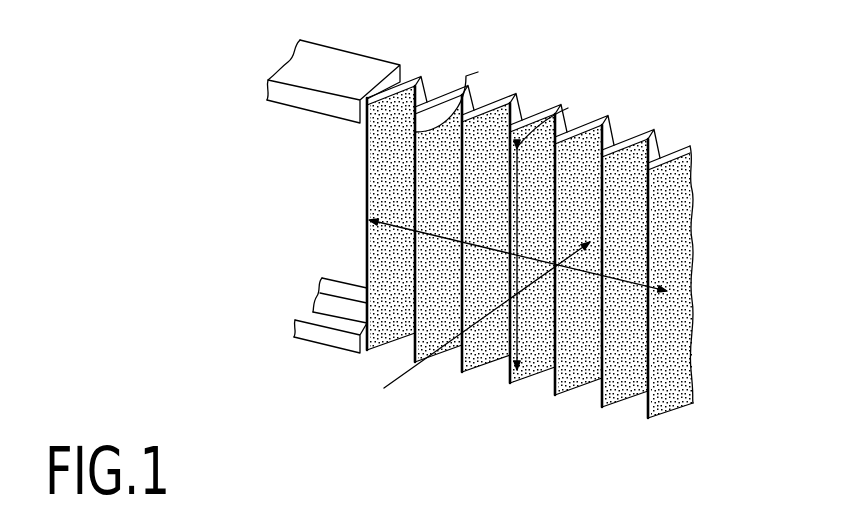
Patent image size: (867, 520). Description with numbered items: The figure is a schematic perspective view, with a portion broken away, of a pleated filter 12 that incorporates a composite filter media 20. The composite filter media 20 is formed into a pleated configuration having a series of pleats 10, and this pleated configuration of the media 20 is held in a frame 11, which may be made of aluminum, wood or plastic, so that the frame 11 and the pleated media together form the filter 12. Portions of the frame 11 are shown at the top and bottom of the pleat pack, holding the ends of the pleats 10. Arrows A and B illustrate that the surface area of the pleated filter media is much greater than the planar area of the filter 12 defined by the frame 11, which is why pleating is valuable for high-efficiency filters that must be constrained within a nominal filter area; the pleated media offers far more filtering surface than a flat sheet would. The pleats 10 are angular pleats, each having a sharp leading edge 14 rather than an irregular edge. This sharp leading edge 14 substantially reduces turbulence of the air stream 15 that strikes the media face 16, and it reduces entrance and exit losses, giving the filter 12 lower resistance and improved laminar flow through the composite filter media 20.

The pleats 10 is at (430, 93).
The frame 11 is at (338, 65).
The pleated filter 12 is at (340, 195).
The sharp leading edge 14 is at (461, 95).
The air stream 15 is at (396, 381).
The media face 16 is at (634, 260).
The composite filter media 20 is at (553, 228).
The arrow A is at (518, 322).
The arrow B is at (568, 108).